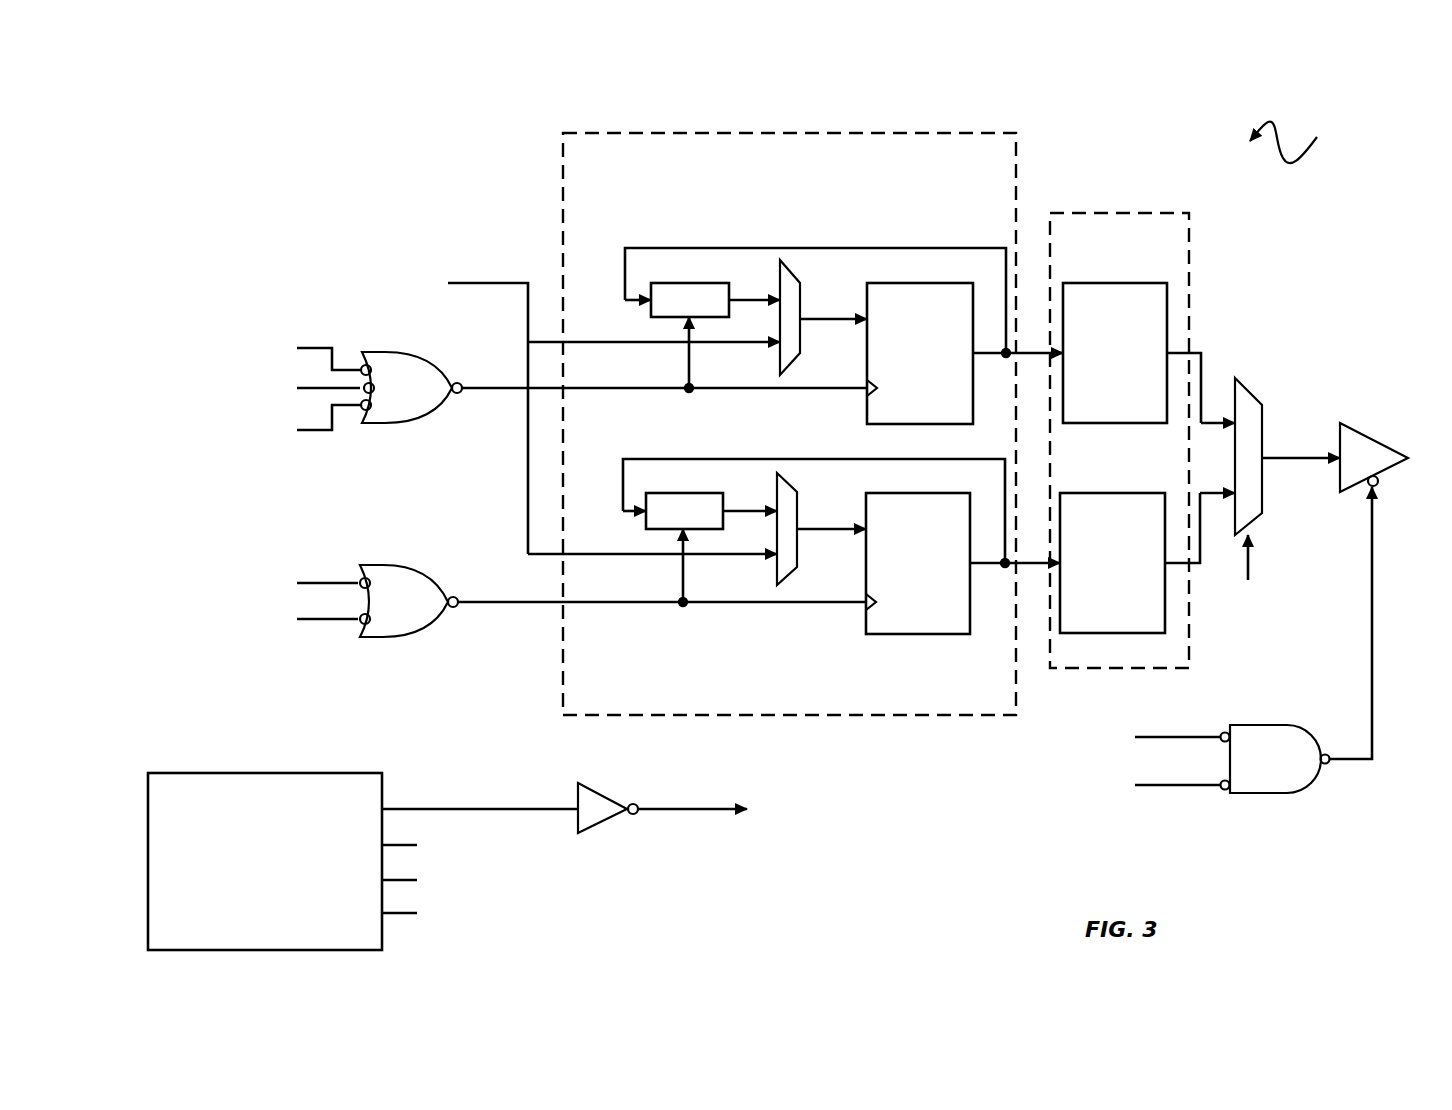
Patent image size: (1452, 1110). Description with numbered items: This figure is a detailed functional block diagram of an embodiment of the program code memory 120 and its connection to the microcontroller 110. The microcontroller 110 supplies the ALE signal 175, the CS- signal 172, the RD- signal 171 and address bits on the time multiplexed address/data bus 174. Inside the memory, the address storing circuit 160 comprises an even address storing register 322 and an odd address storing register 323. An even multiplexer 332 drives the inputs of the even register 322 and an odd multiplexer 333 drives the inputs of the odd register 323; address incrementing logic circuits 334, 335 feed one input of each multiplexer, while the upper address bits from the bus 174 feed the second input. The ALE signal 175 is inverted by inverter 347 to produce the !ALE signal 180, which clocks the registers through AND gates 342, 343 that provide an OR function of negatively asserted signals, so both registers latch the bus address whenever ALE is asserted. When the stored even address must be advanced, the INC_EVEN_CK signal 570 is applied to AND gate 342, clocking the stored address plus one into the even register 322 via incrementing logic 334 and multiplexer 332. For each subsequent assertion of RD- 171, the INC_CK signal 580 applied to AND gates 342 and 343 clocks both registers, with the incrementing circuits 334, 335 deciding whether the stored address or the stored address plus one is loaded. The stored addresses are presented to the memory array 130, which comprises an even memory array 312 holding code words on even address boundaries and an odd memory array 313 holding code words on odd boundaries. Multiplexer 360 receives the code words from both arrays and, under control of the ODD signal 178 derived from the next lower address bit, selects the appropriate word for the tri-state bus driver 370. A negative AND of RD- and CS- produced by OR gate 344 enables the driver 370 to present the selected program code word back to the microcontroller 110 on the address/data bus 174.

The microcontroller 110 is at (278, 773).
The program code memory 120 is at (1306, 143).
The memory array 130 is at (1087, 213).
The address storing circuit 160 is at (563, 165).
The RD- signal 171 is at (395, 880).
The CS- signal 172 is at (395, 845).
The address/data bus 174 is at (395, 913).
The ALE signal 175 is at (397, 809).
The ODD signal 178 is at (1250, 570).
The !ALE signal 180 is at (715, 809).
The even memory array 312 is at (1065, 283).
The odd memory array 313 is at (1063, 493).
The even address storing register 322 is at (885, 283).
The odd address storing register 323 is at (884, 493).
The even multiplexer 332 is at (775, 355).
The odd multiplexer 333 is at (772, 565).
The address incrementing logic circuit 334 is at (665, 283).
The address incrementing logic circuit 335 is at (660, 493).
The AND gate 342 is at (388, 424).
The AND gate 343 is at (385, 637).
The OR gate 344 is at (1288, 703).
The inverter 347 is at (608, 762).
The multiplexer 360 is at (1247, 378).
The tri-state bus driver 370 is at (1360, 428).
The INC_EVEN_CK signal 570 is at (316, 330).
The INC_CK signal 580 is at (302, 430).